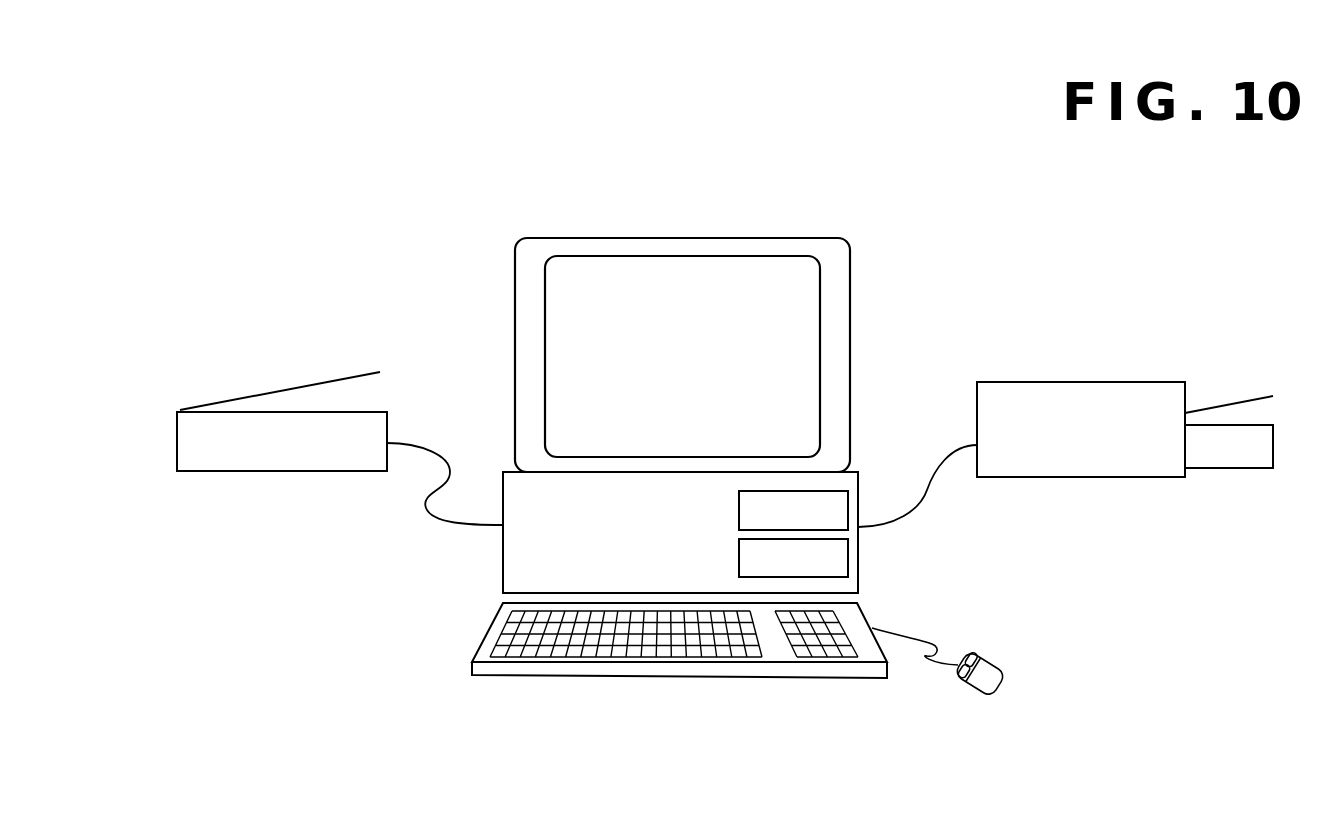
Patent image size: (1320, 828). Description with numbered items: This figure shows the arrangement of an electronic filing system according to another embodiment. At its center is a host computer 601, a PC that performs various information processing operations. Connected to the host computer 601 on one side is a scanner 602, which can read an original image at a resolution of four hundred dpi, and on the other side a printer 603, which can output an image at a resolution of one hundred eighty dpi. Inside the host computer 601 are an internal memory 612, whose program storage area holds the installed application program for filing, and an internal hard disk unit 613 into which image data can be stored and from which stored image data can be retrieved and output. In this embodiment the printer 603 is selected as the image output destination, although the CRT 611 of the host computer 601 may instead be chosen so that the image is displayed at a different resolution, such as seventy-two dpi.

The host computer 601 is at (655, 238).
The scanner 602 is at (260, 472).
The printer 603 is at (1075, 380).
The CRT 611 is at (798, 313).
The internal memory 612 is at (848, 513).
The internal hard disk unit 613 is at (848, 561).